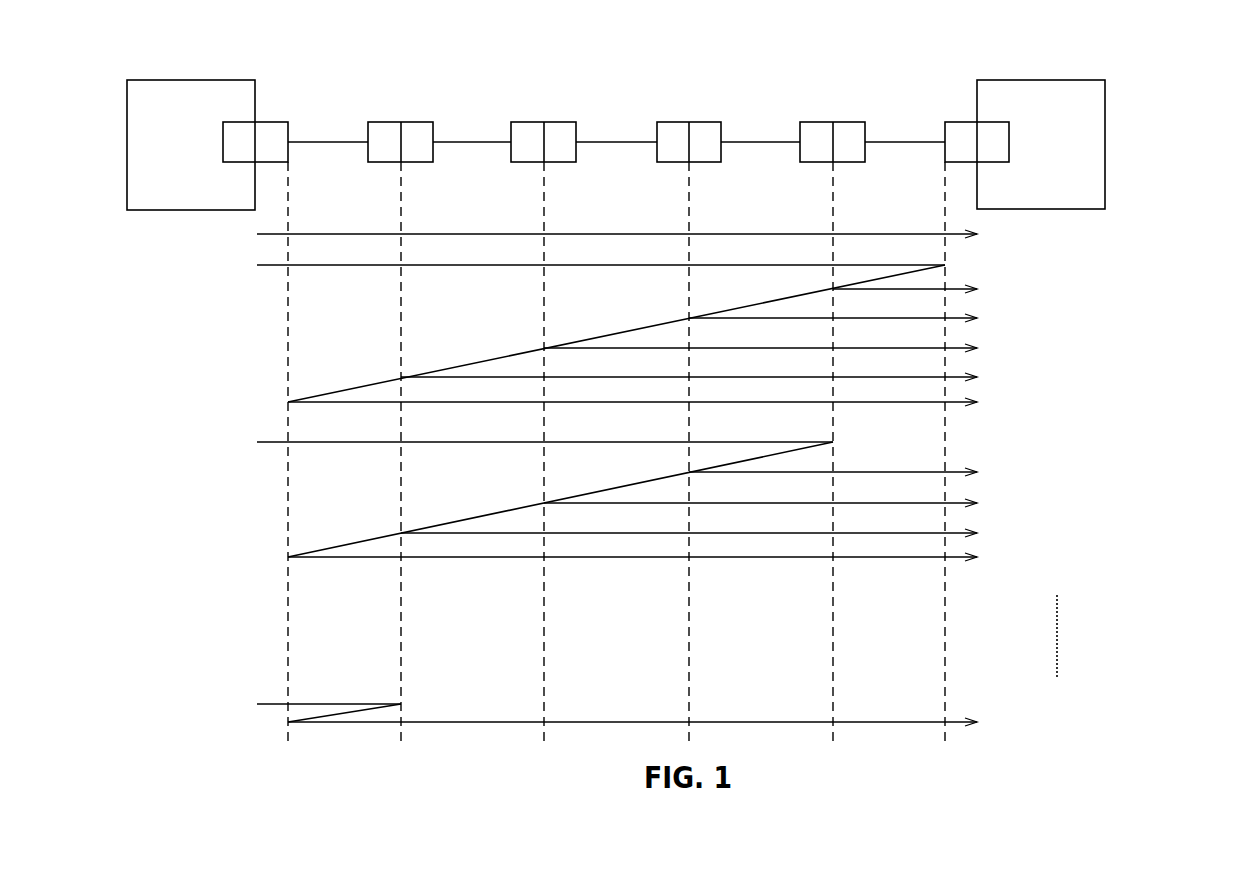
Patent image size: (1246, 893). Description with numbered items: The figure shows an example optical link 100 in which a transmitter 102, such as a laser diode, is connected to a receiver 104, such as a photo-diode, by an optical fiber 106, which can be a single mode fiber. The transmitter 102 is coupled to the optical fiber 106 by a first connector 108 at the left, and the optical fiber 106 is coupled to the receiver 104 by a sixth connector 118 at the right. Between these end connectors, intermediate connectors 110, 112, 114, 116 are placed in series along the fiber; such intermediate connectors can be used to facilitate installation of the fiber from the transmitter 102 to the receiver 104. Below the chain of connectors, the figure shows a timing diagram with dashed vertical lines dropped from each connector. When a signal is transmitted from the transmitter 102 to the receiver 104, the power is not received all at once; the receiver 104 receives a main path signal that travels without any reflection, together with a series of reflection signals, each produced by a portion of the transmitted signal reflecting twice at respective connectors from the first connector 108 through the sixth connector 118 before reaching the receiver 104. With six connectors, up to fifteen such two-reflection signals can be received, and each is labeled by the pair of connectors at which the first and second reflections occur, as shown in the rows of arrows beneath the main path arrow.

The optical link 100 is at (1220, 71).
The transmitter 102 is at (193, 212).
The receiver 104 is at (1059, 78).
The optical fiber 106 is at (343, 140).
The connector R1 108 is at (265, 120).
The connector R2 110 is at (420, 120).
The connector R3 112 is at (567, 120).
The connector R4 114 is at (711, 120).
The connector R5 116 is at (857, 120).
The connector R6 118 is at (965, 120).